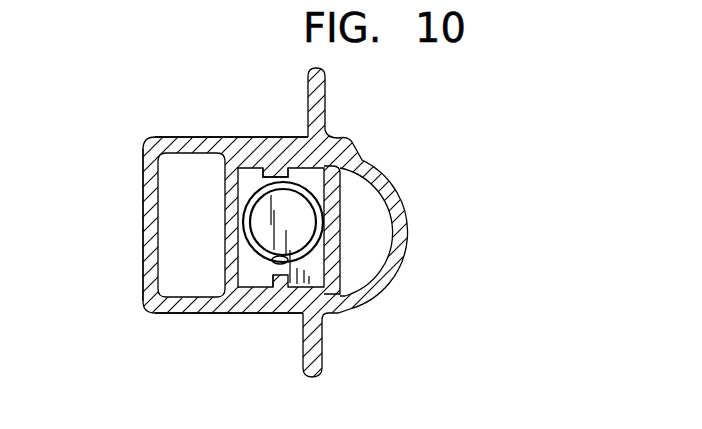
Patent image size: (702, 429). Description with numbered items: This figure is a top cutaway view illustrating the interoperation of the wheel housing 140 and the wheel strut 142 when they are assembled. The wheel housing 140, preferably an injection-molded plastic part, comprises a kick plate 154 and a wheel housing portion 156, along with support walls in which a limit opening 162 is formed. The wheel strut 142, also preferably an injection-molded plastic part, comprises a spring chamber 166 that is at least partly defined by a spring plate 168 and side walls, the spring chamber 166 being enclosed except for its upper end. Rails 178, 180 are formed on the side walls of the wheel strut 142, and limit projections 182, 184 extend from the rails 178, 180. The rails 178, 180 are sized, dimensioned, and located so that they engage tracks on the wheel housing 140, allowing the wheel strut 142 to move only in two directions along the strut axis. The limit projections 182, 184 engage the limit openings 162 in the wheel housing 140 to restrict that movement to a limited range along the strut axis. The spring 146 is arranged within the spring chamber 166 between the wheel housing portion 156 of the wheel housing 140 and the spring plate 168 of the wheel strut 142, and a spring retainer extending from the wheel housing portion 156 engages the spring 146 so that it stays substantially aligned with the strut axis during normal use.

The wheel housing 140 is at (151, 181).
The wheel strut 142 is at (216, 208).
The spring 146 is at (312, 224).
The kick plate 154 is at (409, 234).
The wheel housing portion 156 is at (151, 237).
The limit opening 162 is at (284, 137).
The spring chamber 166 is at (238, 266).
The spring plate 168 is at (312, 183).
The rail 178 is at (240, 137).
The rail 180 is at (238, 314).
The limit projection 182 is at (265, 137).
The limit projection 184 is at (268, 314).